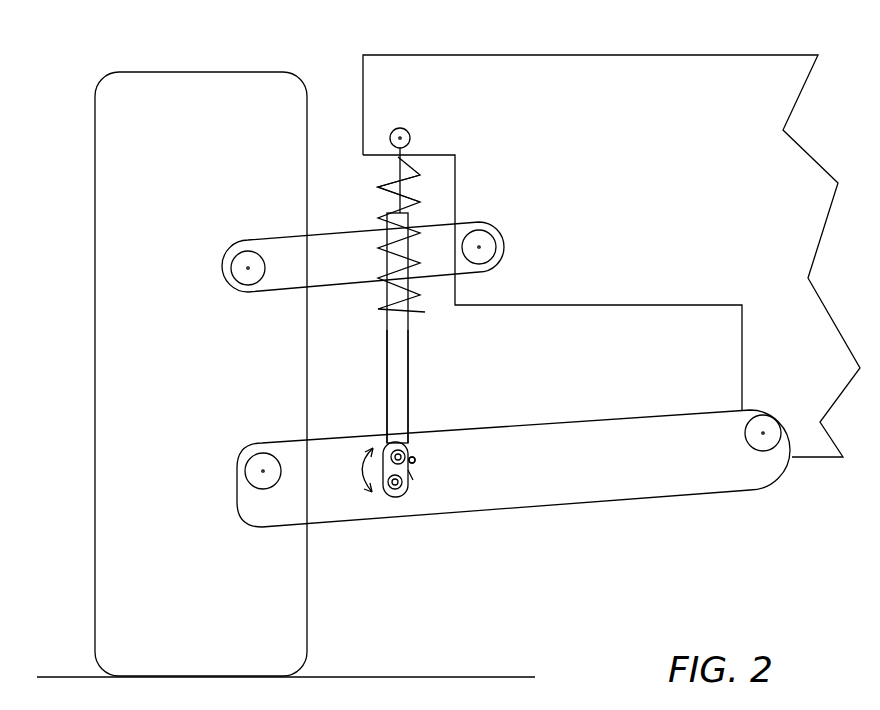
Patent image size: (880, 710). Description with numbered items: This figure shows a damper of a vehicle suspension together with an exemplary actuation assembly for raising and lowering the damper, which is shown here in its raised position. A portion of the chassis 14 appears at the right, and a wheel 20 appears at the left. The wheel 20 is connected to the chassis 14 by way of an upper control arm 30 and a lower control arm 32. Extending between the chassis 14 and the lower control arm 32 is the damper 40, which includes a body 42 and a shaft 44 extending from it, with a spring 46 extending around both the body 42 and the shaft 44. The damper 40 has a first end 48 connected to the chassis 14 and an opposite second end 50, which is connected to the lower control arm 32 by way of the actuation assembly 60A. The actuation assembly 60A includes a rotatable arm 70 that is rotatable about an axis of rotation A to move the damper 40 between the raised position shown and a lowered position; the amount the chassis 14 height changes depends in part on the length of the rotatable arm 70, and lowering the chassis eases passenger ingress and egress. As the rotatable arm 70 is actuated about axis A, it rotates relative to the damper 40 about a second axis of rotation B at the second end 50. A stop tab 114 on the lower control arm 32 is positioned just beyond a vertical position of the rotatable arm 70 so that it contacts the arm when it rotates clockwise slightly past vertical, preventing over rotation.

The chassis 14 is at (658, 90).
The wheel 20 is at (142, 72).
The upper control arm 30 is at (330, 252).
The lower control arm 32 is at (625, 482).
The damper 40 is at (387, 362).
The body 42 is at (397, 405).
The shaft 44 is at (415, 176).
The spring 46 is at (420, 174).
The first end 48 is at (410, 138).
The second end 50 is at (413, 453).
The actuation assembly 60A is at (390, 492).
The rotatable arm 70 is at (410, 472).
The stop tab 114 is at (415, 459).
The axis of rotation A is at (400, 497).
The axis of rotation B is at (415, 463).